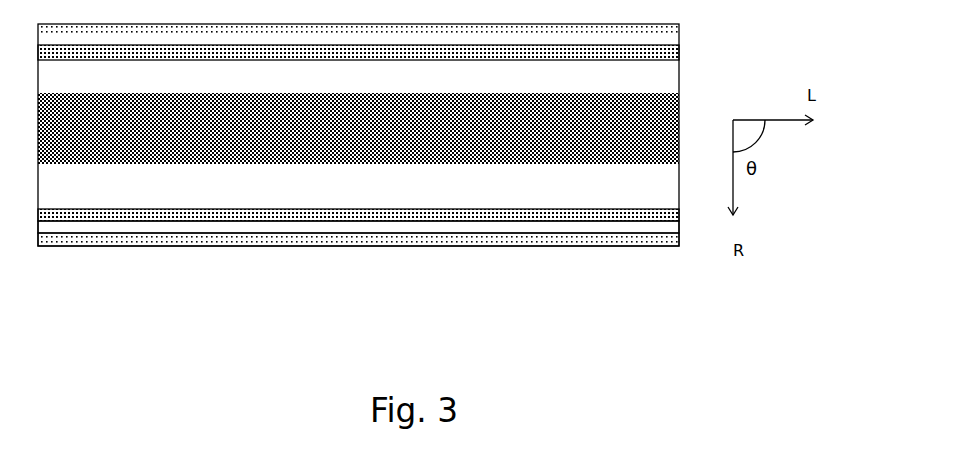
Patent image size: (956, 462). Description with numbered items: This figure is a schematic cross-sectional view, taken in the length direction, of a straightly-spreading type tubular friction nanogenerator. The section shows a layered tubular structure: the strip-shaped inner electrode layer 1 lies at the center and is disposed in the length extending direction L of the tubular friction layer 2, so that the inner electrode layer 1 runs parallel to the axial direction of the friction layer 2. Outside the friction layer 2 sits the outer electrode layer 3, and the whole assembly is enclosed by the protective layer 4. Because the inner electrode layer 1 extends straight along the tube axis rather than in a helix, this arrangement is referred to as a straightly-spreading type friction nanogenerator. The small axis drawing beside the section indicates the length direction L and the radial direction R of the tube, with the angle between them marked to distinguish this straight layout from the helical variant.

The inner electrode layer 1 is at (292, 128).
The friction layer 2 is at (382, 217).
The outer electrode layer 3 is at (445, 227).
The protective layer 4 is at (505, 237).